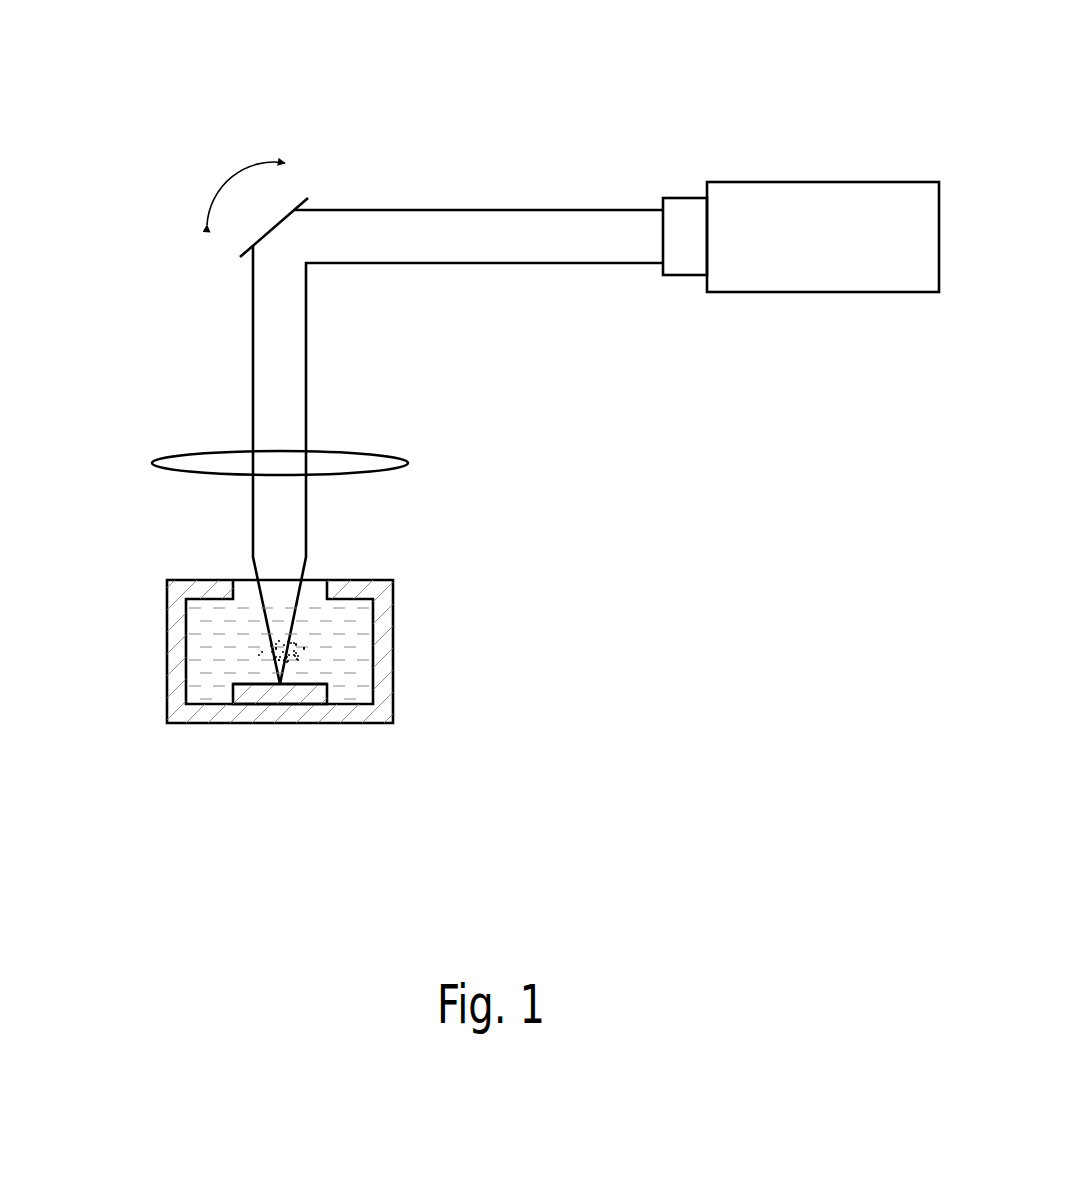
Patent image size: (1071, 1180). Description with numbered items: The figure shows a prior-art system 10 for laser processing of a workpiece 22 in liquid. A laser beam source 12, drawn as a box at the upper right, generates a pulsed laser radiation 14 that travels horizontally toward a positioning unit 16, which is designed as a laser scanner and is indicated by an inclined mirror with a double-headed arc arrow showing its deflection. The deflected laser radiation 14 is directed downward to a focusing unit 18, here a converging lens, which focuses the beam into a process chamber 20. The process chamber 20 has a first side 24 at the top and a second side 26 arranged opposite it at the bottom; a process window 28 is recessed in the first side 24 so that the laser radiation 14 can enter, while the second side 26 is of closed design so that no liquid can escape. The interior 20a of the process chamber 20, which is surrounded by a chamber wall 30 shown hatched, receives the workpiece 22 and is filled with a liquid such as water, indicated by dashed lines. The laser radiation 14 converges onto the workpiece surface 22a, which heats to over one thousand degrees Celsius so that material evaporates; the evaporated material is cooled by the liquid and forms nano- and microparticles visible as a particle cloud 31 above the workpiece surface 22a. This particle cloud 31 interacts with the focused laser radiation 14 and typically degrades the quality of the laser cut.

The system 10 is at (126, 108).
The laser beam source 12 is at (793, 182).
The laser radiation 14 is at (492, 210).
The positioning unit 16 is at (307, 198).
The focusing unit 18 is at (315, 448).
The process chamber 20 is at (412, 625).
The interior 20a is at (371, 640).
The workpiece 22 is at (230, 687).
The workpiece surface 22a is at (270, 686).
The first side 24 is at (382, 540).
The second side 26 is at (364, 737).
The process window 28 is at (253, 580).
The chamber wall 30 is at (167, 660).
The particle cloud 31 is at (300, 650).